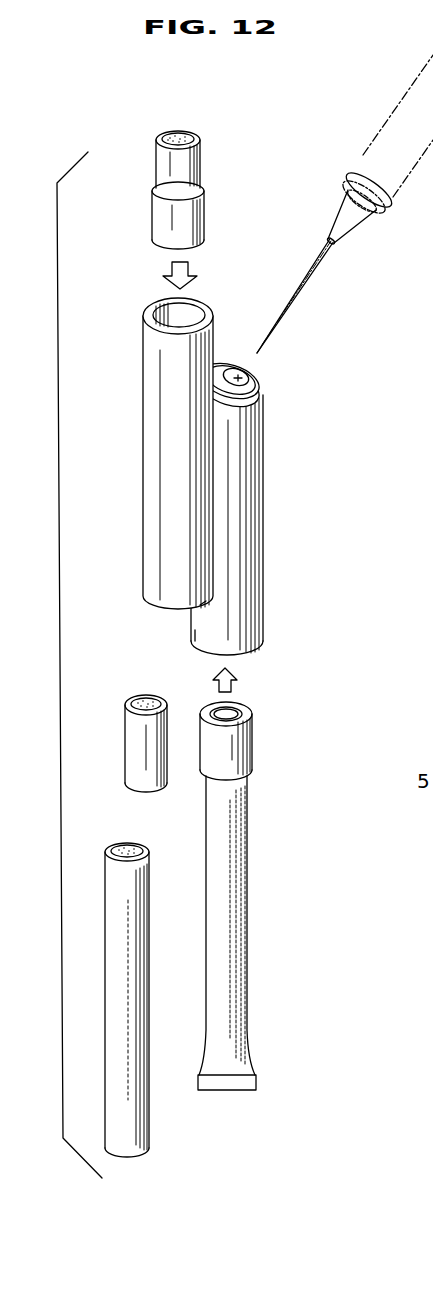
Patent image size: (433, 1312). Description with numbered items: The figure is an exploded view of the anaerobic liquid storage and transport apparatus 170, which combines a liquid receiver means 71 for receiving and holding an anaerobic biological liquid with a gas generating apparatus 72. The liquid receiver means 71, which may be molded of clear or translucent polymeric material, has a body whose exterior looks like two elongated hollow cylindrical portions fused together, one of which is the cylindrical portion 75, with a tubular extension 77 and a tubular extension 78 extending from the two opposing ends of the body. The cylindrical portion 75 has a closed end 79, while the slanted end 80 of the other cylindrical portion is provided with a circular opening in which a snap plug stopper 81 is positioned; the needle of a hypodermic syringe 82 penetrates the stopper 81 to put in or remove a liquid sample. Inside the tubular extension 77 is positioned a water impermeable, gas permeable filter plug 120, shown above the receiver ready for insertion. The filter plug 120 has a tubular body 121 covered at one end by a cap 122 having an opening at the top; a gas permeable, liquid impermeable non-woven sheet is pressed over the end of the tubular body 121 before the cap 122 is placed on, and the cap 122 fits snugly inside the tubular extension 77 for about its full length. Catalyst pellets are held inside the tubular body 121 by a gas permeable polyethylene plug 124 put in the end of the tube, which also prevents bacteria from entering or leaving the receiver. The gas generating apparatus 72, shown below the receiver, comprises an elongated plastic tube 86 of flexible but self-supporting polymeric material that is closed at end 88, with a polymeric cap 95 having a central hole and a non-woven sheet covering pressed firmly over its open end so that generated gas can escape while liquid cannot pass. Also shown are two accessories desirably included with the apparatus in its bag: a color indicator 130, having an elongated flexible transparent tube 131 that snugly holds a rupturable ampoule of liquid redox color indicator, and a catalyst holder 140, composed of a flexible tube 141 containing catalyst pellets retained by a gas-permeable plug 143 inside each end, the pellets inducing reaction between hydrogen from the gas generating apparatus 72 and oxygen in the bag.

The filter plug 120 is at (167, 171).
The tubular body 121 is at (188, 168).
The cap 122 is at (203, 217).
The gas permeable polyethylene plug 124 is at (188, 133).
The hypodermic syringe 82 is at (355, 139).
The tubular extension 77 is at (212, 334).
The cylindrical portion 75 is at (160, 438).
The liquid receiver means 71 is at (167, 468).
The slanted end 80 is at (200, 386).
The snap plug stopper 81 is at (255, 393).
The anaerobic liquid storage and transport apparatus 170 is at (241, 507).
The closed end 79 is at (162, 607).
The tubular extension 78 is at (208, 637).
The gas-permeable plug 143 is at (140, 700).
The flexible tube 141 is at (126, 722).
The catalyst holder 140 is at (117, 730).
The polymeric cap 95 is at (253, 740).
The gas generating apparatus 72 is at (269, 903).
The elongated plastic tube 86 is at (250, 938).
The closed end 88 is at (250, 1081).
The color indicator 130 is at (134, 1000).
The elongated flexible transparent tube 131 is at (108, 995).